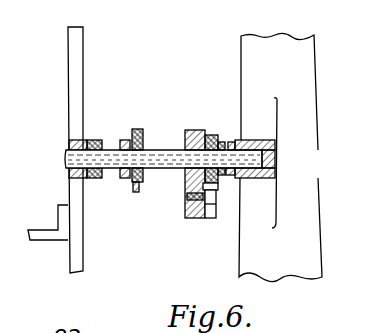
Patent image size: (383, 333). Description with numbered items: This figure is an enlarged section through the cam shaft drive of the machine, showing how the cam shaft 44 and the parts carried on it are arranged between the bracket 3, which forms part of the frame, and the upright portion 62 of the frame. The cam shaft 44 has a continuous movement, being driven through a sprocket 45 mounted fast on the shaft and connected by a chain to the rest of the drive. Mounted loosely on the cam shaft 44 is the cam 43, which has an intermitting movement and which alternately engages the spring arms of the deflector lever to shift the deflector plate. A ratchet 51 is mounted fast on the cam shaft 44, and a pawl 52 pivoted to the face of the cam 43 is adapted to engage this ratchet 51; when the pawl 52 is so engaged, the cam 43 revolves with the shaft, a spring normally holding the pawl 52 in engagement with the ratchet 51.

The bracket 3 is at (75, 95).
The cam 43 is at (191, 130).
The cam shaft 44 is at (163, 158).
The sprocket 45 is at (135, 129).
The ratchet 51 is at (210, 135).
The pawl 52 is at (209, 218).
The upright portion of the frame 62 is at (297, 97).